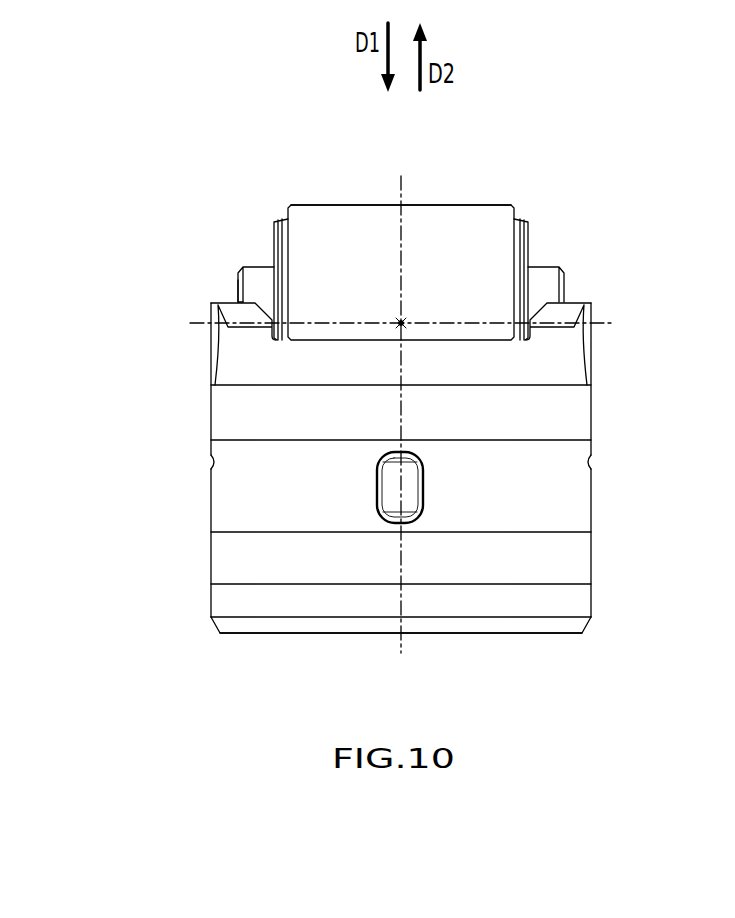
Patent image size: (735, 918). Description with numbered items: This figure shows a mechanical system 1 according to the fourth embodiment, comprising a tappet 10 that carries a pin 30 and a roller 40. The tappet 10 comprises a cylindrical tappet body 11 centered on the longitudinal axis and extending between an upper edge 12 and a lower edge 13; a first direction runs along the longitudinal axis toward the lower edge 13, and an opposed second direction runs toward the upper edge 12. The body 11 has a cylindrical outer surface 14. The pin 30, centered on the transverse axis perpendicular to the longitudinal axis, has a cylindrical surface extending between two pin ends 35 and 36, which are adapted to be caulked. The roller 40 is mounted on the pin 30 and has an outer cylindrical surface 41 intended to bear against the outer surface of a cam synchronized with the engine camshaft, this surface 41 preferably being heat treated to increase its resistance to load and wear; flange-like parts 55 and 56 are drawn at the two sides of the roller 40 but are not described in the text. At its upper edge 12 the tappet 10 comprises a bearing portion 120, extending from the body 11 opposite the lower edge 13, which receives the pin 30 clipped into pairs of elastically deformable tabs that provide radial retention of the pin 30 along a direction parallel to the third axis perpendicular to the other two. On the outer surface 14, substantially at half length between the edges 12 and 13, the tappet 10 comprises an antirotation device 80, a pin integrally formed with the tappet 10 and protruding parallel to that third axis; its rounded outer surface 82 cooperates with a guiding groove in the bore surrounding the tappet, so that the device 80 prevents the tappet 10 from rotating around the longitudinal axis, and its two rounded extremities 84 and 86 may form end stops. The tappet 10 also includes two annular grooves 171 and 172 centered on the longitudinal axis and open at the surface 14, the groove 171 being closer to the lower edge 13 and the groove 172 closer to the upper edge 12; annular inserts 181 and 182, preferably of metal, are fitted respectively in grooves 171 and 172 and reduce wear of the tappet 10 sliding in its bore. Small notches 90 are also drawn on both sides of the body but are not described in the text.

The mechanical system 1 is at (187, 152).
The tappet 10 is at (315, 652).
The tappet body 11 is at (570, 606).
The upper edge 12 is at (615, 345).
The lower edge 13 is at (522, 637).
The outer surface 14 is at (592, 519).
The pin 30 is at (260, 278).
The pin end 35 is at (238, 276).
The pin end 36 is at (565, 274).
The roller 40 is at (348, 224).
The outer cylindrical surface 41 is at (455, 203).
The first flange 55 is at (273, 230).
The second flange 56 is at (529, 237).
The antirotation device 80 is at (424, 490).
The outer surface 82 is at (392, 482).
The extremity 84 is at (378, 457).
The extremity 86 is at (378, 521).
The notch 90 is at (210, 460).
The bearing portion 120 is at (608, 287).
The annular groove 171 is at (210, 578).
The annular groove 172 is at (210, 403).
The annular insert 181 is at (543, 580).
The annular insert 182 is at (547, 435).